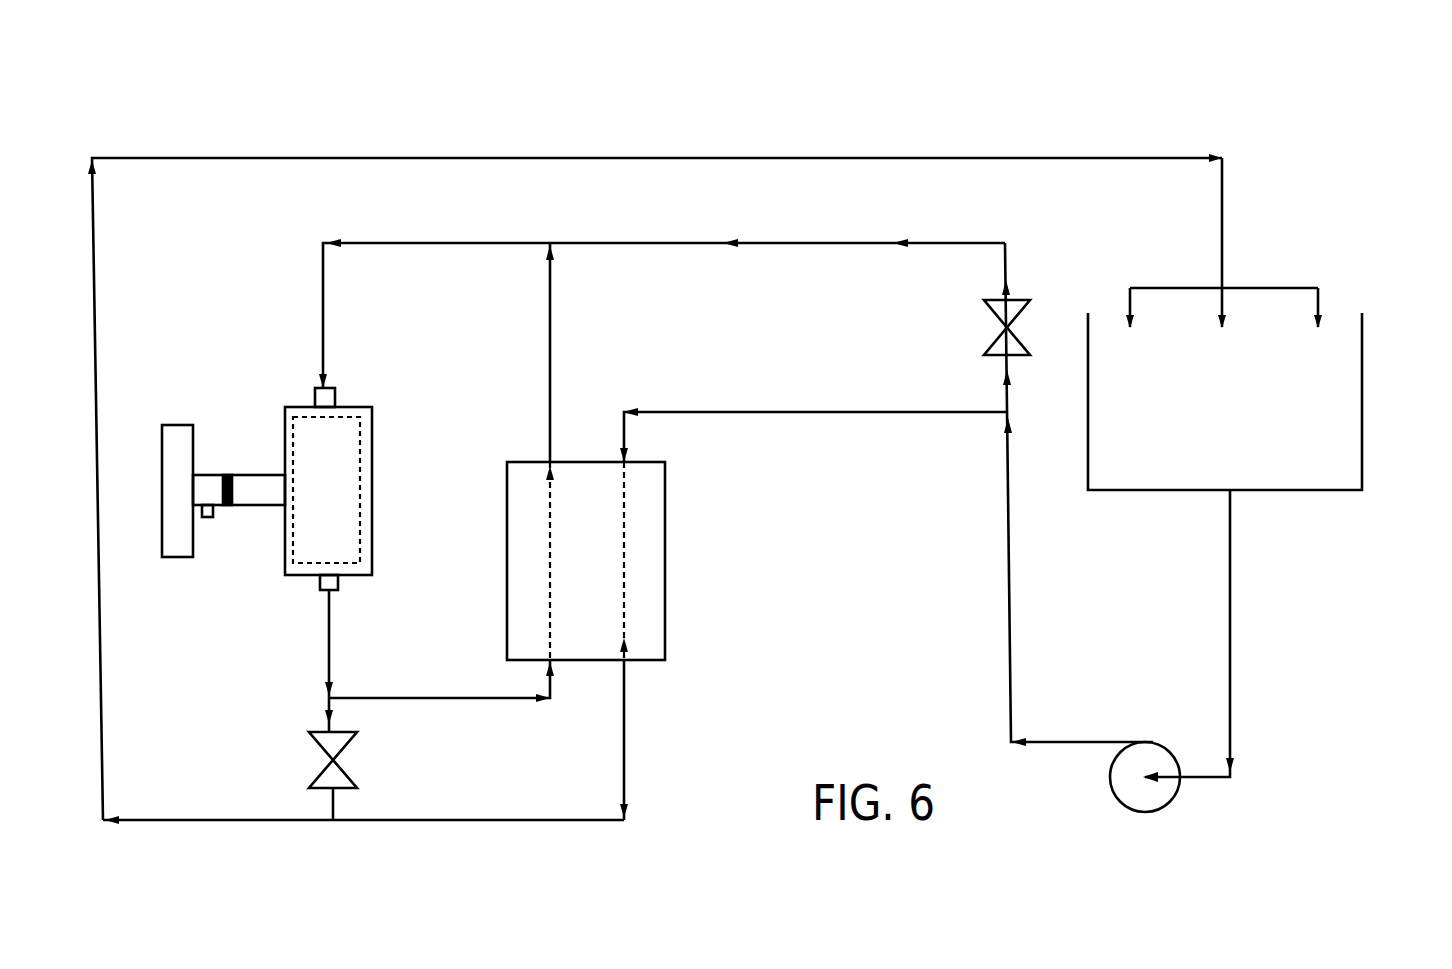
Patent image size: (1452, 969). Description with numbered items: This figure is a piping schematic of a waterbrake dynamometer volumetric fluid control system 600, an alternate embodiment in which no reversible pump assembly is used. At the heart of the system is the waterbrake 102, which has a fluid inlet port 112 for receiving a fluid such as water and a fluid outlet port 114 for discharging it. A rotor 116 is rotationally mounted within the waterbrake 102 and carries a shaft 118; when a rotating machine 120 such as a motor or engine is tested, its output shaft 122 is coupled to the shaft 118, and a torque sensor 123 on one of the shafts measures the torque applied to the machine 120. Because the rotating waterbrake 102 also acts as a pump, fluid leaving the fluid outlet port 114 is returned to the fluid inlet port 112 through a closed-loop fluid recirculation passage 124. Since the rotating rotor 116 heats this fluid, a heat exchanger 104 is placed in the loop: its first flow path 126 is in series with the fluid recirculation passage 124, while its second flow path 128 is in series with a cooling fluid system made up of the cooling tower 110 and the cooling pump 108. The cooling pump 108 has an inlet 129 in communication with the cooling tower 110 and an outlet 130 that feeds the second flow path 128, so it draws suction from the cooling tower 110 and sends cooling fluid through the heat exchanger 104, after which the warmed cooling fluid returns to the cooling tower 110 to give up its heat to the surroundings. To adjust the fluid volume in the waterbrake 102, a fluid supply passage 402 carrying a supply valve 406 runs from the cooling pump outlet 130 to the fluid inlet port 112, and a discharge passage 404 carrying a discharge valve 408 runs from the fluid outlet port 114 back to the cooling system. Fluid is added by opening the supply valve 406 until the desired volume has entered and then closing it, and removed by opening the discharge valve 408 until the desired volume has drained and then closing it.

The waterbrake dynamometer volumetric fluid control system 600 is at (1053, 137).
The waterbrake 102 is at (372, 452).
The heat exchanger 104 is at (665, 503).
The cooling pump 108 is at (1153, 742).
The cooling tower 110 is at (1362, 405).
The fluid inlet port 112 is at (335, 400).
The fluid outlet port 114 is at (340, 585).
The rotor 116 is at (372, 508).
The shaft 118 is at (265, 473).
The rotating machine 120 is at (163, 428).
The output shaft 122 is at (208, 473).
The torque sensor 123 is at (210, 520).
The fluid recirculation passage 124 is at (385, 280).
The first flow path 126 is at (548, 610).
The second flow path 128 is at (625, 612).
The cooling pump inlet 129 is at (1200, 777).
The cooling pump outlet 130 is at (1077, 742).
The fluid supply passage 402 is at (803, 243).
The discharge passage 404 is at (329, 705).
The supply valve 406 is at (1003, 330).
The discharge valve 408 is at (347, 757).